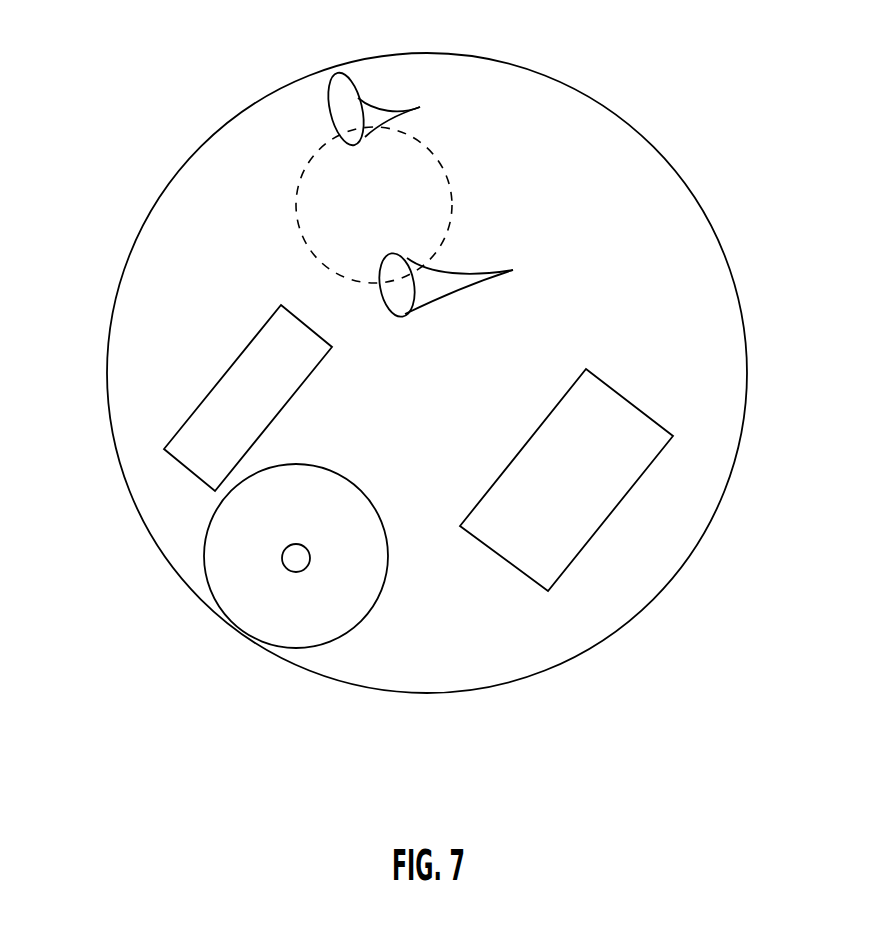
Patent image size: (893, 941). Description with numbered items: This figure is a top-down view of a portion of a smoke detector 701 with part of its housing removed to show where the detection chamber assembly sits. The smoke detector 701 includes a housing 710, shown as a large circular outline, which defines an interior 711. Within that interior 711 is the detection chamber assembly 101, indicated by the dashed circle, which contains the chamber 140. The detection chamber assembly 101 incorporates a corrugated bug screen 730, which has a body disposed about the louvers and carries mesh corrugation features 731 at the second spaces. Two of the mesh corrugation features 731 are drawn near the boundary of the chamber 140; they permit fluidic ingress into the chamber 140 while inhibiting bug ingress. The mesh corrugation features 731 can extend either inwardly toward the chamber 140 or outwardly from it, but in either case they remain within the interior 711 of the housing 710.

The smoke detector 701 is at (138, 124).
The housing 710 is at (668, 160).
The interior 711 is at (717, 469).
The detection chamber assembly 101 is at (295, 203).
The chamber 140 is at (390, 217).
The corrugated bug screen 730 is at (369, 182).
The mesh corrugation features 731 is at (325, 126).